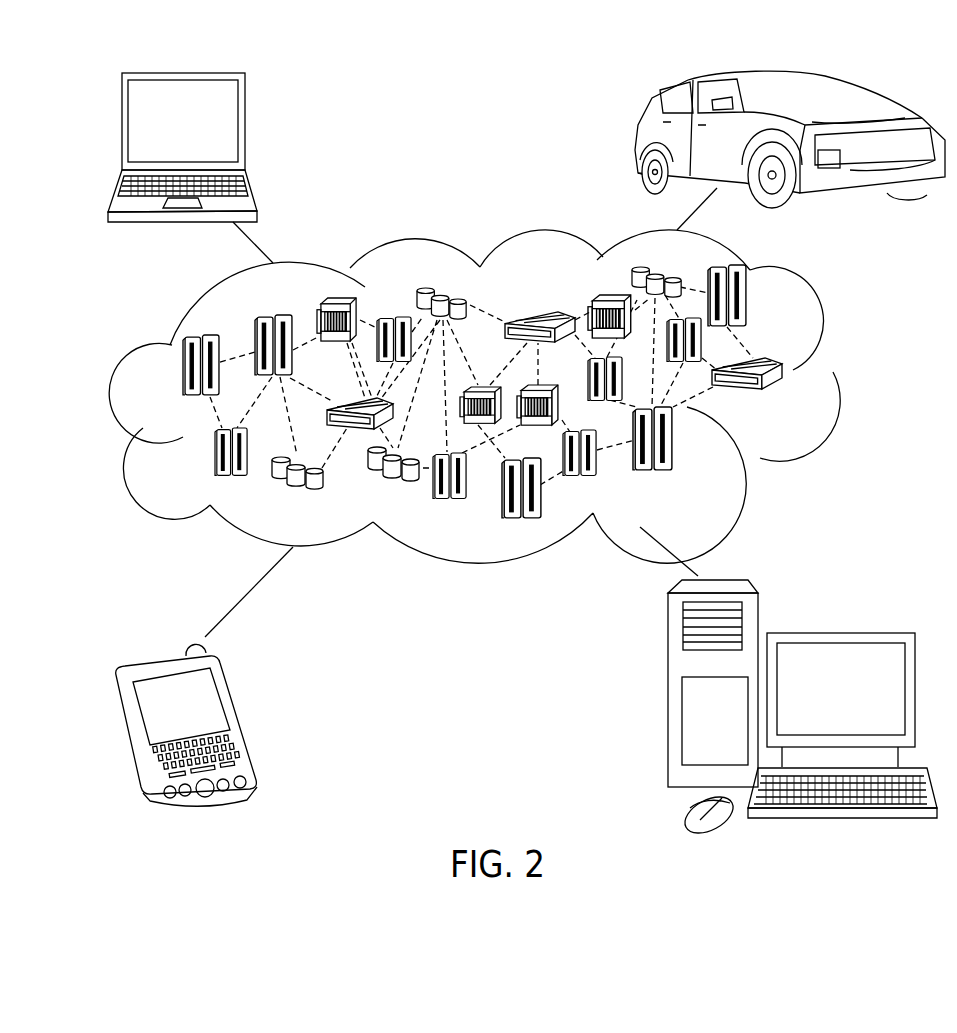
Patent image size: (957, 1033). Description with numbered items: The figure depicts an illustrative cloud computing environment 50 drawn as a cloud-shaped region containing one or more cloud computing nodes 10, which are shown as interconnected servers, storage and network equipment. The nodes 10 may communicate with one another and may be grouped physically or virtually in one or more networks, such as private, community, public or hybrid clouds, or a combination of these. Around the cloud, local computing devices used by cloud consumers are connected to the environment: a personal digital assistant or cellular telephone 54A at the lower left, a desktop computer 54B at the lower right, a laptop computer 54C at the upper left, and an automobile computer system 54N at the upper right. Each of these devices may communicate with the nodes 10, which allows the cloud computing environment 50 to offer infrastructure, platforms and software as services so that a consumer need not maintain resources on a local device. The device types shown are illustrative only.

The cloud computing environment 50 is at (835, 372).
The cloud computing node 10 is at (526, 391).
The personal digital assistant or cellular telephone 54A is at (238, 718).
The desktop computer 54B is at (837, 632).
The laptop computer 54C is at (245, 127).
The automobile computer system 54N is at (633, 140).